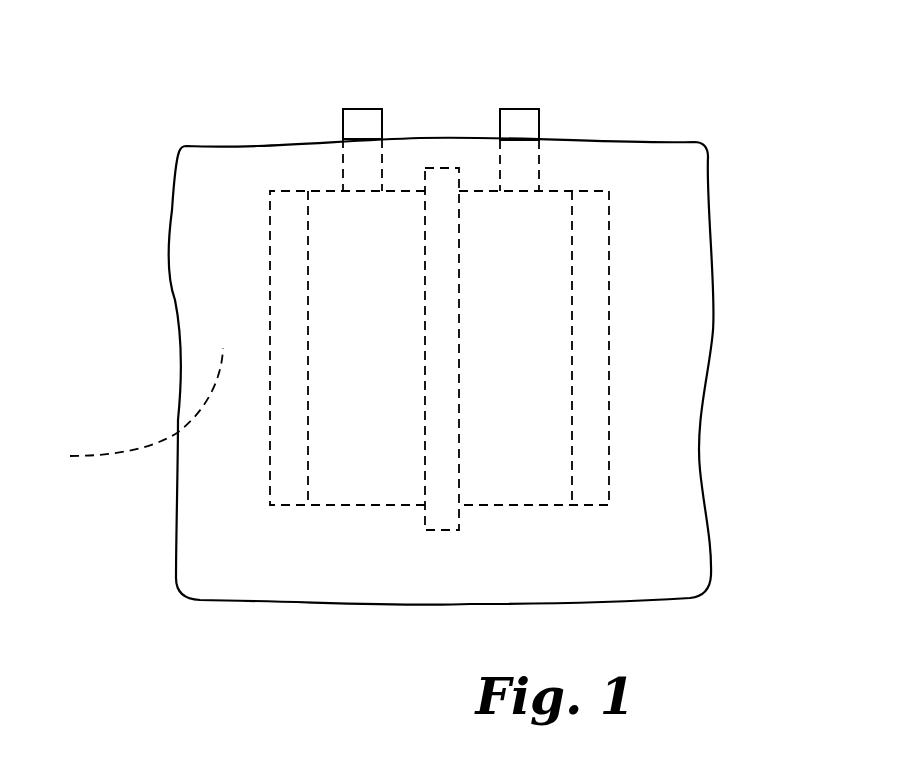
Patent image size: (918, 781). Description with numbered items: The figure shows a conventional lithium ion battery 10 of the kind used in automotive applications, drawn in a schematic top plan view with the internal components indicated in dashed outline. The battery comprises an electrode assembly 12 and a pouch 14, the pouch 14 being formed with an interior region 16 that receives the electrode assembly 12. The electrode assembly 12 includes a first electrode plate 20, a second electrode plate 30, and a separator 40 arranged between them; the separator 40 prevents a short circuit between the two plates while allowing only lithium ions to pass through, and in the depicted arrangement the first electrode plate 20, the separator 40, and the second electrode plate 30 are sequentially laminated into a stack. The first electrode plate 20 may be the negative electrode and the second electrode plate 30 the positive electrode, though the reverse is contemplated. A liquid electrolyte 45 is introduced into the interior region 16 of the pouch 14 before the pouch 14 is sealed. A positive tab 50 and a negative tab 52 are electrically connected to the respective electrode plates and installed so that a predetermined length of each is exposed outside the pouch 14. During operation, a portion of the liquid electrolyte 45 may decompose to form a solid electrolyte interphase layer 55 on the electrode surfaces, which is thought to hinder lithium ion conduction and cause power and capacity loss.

The lithium ion battery 10 is at (688, 118).
The electrode assembly 12 is at (666, 355).
The pouch 14 is at (167, 265).
The interior region 16 is at (666, 268).
The first electrode plate 20 is at (334, 222).
The second electrode plate 30 is at (544, 223).
The separator 40 is at (437, 531).
The liquid electrolyte 45 is at (128, 409).
The positive tab 50 is at (360, 117).
The negative tab 52 is at (530, 117).
The solid electrolyte interphase (SEI) layer 55 is at (288, 507).